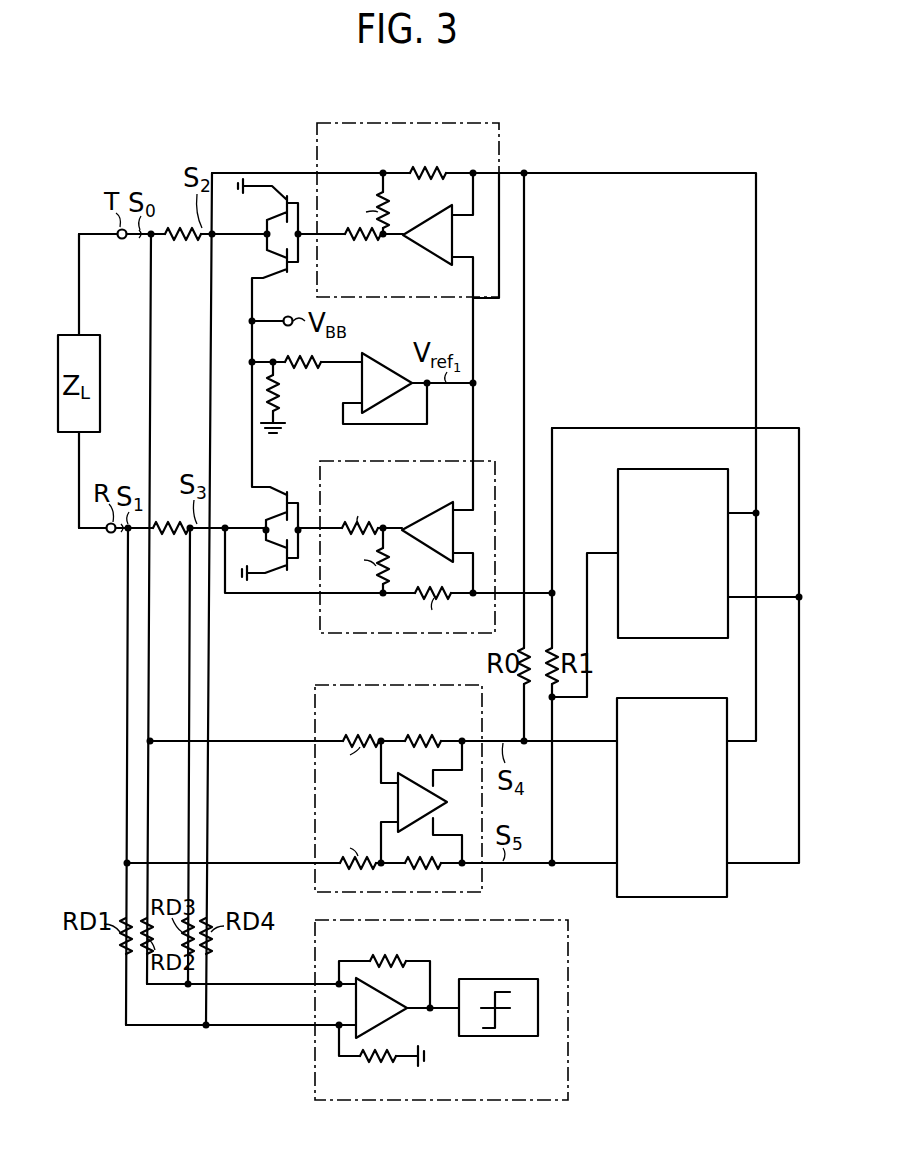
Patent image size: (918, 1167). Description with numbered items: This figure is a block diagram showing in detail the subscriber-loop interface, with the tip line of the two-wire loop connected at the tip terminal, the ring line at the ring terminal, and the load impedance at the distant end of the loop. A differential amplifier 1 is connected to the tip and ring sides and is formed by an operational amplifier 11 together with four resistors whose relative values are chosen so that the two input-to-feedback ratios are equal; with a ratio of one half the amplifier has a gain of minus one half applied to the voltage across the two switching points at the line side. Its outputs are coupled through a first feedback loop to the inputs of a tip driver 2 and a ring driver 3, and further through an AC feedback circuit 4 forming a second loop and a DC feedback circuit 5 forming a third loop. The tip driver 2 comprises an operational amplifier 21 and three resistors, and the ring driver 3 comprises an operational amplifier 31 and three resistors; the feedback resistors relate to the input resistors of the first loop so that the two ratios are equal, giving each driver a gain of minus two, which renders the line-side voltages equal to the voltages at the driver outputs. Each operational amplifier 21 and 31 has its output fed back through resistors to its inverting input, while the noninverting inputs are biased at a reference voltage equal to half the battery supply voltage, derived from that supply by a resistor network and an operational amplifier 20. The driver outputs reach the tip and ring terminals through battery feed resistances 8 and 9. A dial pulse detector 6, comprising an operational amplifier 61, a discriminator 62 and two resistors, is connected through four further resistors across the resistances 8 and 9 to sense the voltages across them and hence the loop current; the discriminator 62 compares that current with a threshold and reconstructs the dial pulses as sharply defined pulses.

The differential amplifier 1 is at (399, 768).
The tip driver 2 is at (408, 253).
The ring driver 3 is at (436, 509).
The AC feedback circuit 4 is at (678, 698).
The DC feedback circuit 5 is at (680, 469).
The dial pulse detector 6 is at (441, 990).
The battery feed resistance 8 is at (186, 241).
The battery feed resistance 9 is at (173, 534).
The operational amplifier 11 is at (438, 786).
The operational amplifier 20 is at (400, 355).
The operational amplifier 21 is at (426, 250).
The operational amplifier 31 is at (436, 518).
The operational amplifier 61 is at (390, 1018).
The discriminator 62 is at (492, 1038).